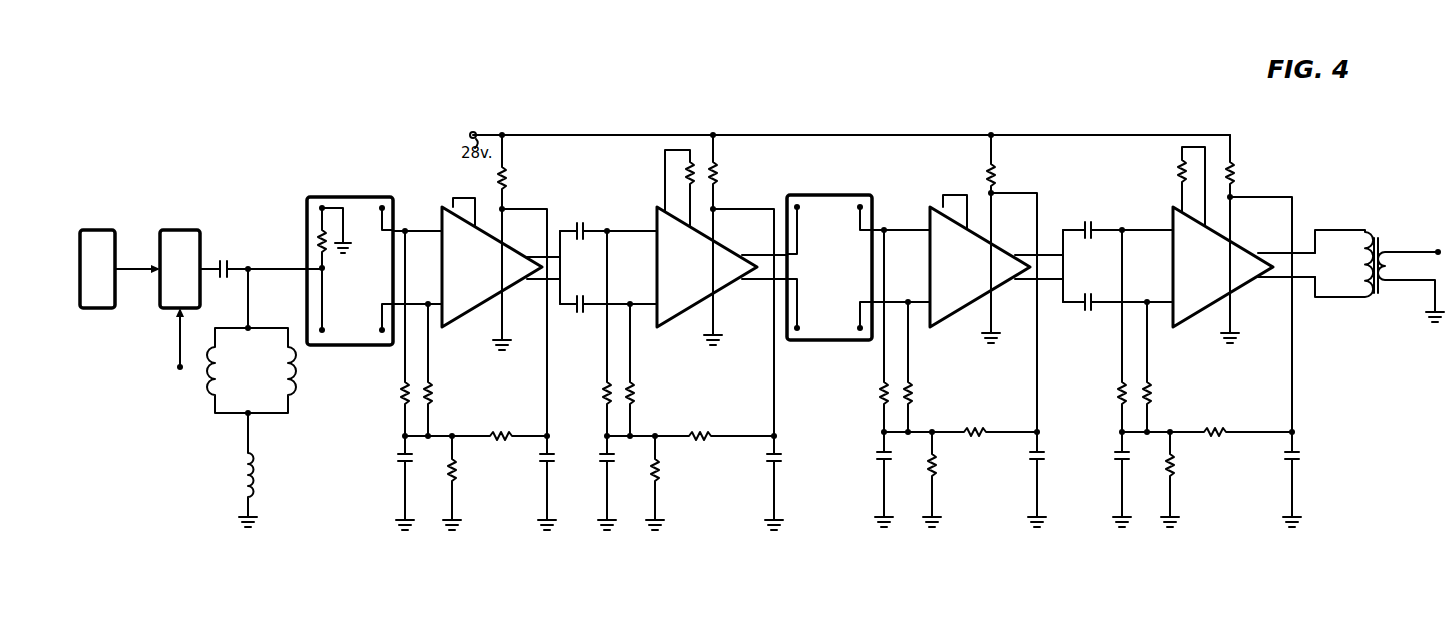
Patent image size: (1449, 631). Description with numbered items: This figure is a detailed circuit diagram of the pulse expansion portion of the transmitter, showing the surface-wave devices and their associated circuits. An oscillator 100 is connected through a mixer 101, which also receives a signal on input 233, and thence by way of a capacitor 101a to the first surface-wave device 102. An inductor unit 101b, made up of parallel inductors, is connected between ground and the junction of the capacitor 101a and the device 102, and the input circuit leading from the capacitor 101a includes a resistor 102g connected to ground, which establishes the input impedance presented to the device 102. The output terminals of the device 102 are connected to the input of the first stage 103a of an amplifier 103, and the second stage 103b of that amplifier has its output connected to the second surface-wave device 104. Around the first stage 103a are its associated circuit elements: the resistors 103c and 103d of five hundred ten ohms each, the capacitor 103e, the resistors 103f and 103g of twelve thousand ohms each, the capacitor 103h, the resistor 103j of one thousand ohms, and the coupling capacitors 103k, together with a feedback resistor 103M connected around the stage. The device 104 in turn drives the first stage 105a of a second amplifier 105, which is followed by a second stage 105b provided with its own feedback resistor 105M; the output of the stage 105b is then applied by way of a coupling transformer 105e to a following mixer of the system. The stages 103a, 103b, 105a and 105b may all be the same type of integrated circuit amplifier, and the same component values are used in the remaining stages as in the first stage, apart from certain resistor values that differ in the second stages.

The oscillator 100 is at (79, 234).
The mixer 101 is at (171, 215).
The capacitor 101a is at (216, 249).
The inductor unit 101b is at (251, 370).
The input signal line 233 is at (178, 369).
The surface-wave device 102 is at (320, 261).
The resistor 102g is at (318, 236).
The amplifier 103 is at (722, 125).
The first stage of amplifier 103a is at (476, 262).
The second stage of amplifier 103b is at (722, 267).
The resistor 103c is at (402, 396).
The resistor 103d is at (431, 396).
The capacitor 103e is at (397, 457).
The resistor 103f is at (456, 484).
The resistor 103g is at (483, 436).
The capacitor 103h is at (550, 464).
The resistor 103j is at (506, 183).
The capacitors 103k is at (578, 296).
The feedback resistor 103M is at (687, 175).
The second surface-wave device 104 is at (825, 195).
The amplifier 105 is at (1236, 121).
The first stage of amplifier 105a is at (996, 261).
The second stage of amplifier 105b is at (1244, 267).
The feedback resistor 105M is at (1180, 182).
The coupling transformer 105e is at (1380, 245).